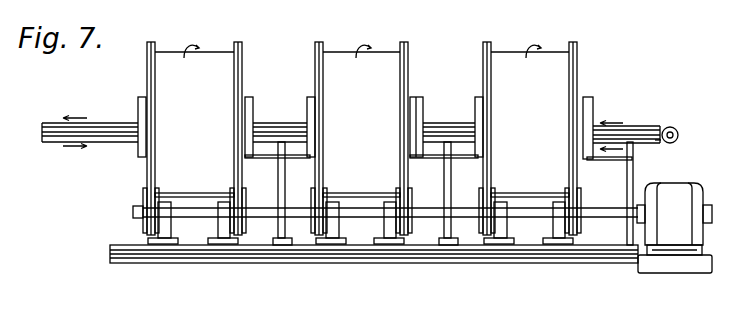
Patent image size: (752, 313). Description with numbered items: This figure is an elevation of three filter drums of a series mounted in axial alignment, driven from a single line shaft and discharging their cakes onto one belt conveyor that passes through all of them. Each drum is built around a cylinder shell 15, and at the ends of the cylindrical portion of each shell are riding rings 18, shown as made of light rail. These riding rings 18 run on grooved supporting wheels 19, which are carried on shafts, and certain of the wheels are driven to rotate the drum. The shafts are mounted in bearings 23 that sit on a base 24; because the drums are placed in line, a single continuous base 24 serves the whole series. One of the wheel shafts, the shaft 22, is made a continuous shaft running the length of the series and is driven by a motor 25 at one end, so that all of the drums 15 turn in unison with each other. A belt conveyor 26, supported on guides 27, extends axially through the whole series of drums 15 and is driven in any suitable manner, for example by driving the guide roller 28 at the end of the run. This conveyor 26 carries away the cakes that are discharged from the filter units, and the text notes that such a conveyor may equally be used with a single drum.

The cylinder shell 15 is at (196, 96).
The riding rings 18 is at (233, 42).
The grooved supporting wheels 19 is at (312, 197).
The shaft 22 is at (433, 219).
The bearings 23 is at (218, 225).
The base 24 is at (379, 252).
The motor 25 is at (675, 214).
The belt conveyor 26 is at (273, 131).
The guides 27 is at (651, 141).
The guide roller 28 is at (686, 129).